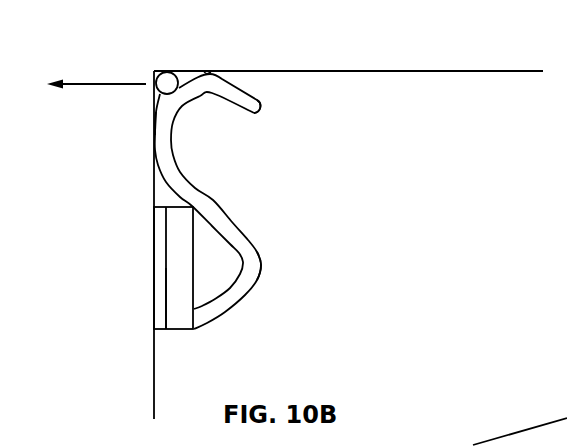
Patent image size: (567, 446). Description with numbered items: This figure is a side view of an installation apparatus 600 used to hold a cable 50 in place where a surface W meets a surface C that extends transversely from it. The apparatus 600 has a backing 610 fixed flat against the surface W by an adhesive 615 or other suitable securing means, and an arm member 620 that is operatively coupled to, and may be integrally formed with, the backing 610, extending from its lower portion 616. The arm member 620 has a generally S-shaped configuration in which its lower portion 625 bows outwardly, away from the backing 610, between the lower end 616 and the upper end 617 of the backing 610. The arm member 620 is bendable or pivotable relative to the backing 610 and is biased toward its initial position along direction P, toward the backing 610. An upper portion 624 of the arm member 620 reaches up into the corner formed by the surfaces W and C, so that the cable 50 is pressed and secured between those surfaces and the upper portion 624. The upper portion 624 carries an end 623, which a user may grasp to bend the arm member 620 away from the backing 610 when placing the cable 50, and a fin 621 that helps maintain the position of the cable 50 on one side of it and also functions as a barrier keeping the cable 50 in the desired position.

The cable 50 is at (157, 79).
The installation apparatus 600 is at (215, 174).
The backing 610 is at (134, 255).
The adhesive 615 is at (157, 240).
The lower portion of the backing 616 is at (173, 300).
The upper end of the backing 617 is at (178, 218).
The arm member 620 is at (248, 218).
The fin 621 is at (209, 70).
The end 623 is at (253, 112).
The upper portion of the arm member 624 is at (162, 128).
The lower portion of the arm member 625 is at (250, 262).
The surface W is at (153, 399).
The surface C is at (431, 70).
The direction P is at (86, 85).